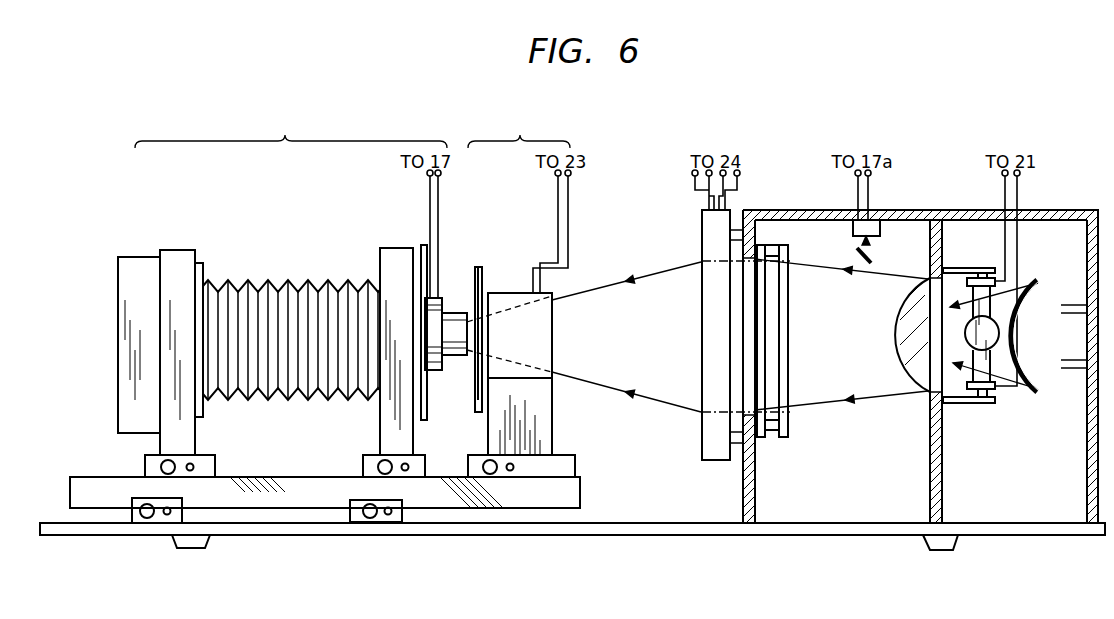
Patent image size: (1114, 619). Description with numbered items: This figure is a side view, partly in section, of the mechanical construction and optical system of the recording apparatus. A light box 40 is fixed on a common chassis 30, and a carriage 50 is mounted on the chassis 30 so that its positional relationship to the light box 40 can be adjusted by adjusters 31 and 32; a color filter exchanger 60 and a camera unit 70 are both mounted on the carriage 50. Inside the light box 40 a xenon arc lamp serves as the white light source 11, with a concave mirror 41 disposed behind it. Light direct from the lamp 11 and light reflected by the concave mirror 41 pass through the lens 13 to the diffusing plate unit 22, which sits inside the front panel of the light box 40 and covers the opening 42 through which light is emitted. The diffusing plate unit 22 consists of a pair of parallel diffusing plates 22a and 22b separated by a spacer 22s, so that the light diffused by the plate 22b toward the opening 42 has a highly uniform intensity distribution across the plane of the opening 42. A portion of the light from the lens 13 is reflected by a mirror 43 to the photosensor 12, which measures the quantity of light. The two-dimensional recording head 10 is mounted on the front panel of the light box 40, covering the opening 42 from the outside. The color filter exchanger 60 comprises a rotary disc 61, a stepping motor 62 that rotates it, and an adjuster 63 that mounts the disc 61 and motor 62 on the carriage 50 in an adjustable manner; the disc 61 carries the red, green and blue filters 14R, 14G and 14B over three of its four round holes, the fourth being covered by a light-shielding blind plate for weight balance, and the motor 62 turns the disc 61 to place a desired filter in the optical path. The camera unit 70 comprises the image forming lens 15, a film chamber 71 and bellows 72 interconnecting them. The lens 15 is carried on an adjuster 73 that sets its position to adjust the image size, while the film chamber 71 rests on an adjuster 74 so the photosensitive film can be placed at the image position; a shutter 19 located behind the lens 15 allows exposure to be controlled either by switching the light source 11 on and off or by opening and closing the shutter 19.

The two-dimensional recording head 10 is at (702, 218).
The light source 11 is at (1000, 375).
The photosensor 12 is at (880, 232).
The collimator lens 13 is at (905, 352).
The red filter 14R is at (502, 241).
The green filter 14G is at (502, 275).
The blue filter 14B is at (483, 270).
The image forming lens 15 is at (455, 356).
The shutter 19 is at (433, 371).
The diffusing plate unit 22 is at (803, 362).
The diffusing plate 22a is at (765, 437).
The diffusing plate 22b is at (790, 437).
The spacer 22s is at (772, 250).
The chassis 30 is at (91, 535).
The adjuster 31 is at (164, 523).
The adjuster 32 is at (361, 523).
The light box 40 is at (1047, 210).
The concave mirror 41 is at (1050, 290).
The opening 42 is at (745, 410).
The mirror 43 is at (855, 256).
The carriage 50 is at (285, 508).
The color filter exchanger 60 is at (519, 130).
The rotary disc 61 is at (477, 267).
The stepping motor 62 is at (556, 290).
The adjuster 63 is at (566, 456).
The camera unit 70 is at (291, 130).
The film chamber 71 is at (148, 257).
The bellows 72 is at (273, 282).
The adjuster 73 is at (371, 456).
The adjuster 74 is at (208, 456).